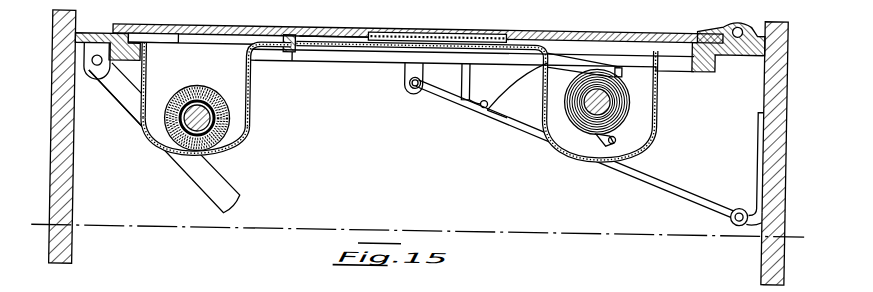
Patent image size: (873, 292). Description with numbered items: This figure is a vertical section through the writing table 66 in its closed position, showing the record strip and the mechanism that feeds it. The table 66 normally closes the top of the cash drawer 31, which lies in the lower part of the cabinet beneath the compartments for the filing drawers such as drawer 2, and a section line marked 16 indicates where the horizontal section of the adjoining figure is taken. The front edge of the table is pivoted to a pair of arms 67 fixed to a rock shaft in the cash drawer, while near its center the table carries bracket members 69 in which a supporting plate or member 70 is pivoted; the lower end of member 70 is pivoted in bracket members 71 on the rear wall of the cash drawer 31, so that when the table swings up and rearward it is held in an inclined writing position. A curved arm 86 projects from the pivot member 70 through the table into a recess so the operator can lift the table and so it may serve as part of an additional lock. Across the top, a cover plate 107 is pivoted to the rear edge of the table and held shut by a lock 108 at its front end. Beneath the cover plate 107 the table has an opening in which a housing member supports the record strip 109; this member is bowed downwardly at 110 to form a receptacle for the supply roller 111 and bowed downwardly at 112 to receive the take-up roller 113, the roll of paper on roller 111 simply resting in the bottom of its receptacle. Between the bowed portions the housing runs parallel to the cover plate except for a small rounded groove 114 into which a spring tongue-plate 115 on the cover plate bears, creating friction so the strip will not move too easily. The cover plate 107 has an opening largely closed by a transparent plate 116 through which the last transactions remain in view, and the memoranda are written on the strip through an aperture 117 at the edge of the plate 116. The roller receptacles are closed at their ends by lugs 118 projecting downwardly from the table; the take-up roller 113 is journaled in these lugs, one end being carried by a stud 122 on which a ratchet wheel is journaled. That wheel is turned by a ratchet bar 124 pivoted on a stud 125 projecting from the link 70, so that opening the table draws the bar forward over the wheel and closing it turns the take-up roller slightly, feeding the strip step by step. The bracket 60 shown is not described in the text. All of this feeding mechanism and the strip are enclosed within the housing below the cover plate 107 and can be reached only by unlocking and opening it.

The filing drawer 2 is at (788, 25).
The section line 16- 16 is at (44, 250).
The cash drawer 31 is at (766, 255).
The supporting bracket 60 is at (82, 30).
The writing table 66 is at (357, 46).
The arms 67 is at (205, 177).
The bracket members 69 is at (408, 66).
The supporting plate or member 70 is at (651, 171).
The bracket members 71 is at (747, 196).
The curved arm 86 is at (453, 84).
The cover plate 107 is at (593, 26).
The lock 108 is at (143, 31).
The record strip 109 is at (252, 88).
The bowed portion 110 is at (252, 116).
The supply roller 111 is at (158, 138).
The bowed portion 112 is at (654, 117).
The take-up roller 113 is at (611, 94).
The rounded groove 114 is at (294, 50).
The spring tongue-plate 115 is at (288, 29).
The transparent plate 116 is at (440, 25).
The aperture 117 is at (335, 22).
The lugs 118 is at (648, 72).
The stud 122 is at (627, 131).
The ratchet bar 124 is at (528, 71).
The stud 125 is at (483, 101).